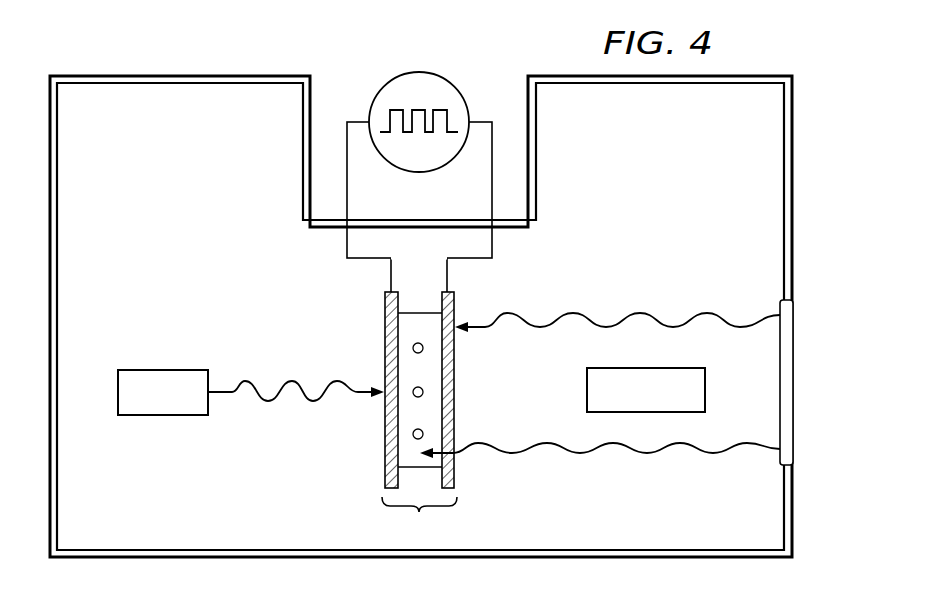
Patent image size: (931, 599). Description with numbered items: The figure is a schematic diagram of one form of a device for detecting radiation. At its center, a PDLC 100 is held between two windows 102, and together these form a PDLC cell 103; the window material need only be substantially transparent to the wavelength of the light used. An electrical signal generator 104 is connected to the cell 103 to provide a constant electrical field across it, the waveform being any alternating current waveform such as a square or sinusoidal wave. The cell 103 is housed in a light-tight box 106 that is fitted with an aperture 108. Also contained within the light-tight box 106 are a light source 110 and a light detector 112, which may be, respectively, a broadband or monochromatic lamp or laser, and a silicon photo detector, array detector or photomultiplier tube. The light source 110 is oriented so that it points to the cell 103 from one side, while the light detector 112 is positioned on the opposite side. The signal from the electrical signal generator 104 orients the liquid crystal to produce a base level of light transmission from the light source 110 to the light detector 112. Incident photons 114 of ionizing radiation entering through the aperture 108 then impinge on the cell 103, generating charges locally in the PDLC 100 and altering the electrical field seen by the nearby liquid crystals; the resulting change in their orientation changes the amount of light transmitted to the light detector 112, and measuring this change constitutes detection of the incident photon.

The PDLC 100 is at (415, 368).
The windows 102 is at (388, 432).
The PDLC cell 103 is at (419, 520).
The electrical signal generator 104 is at (438, 72).
The light-tight box 106 is at (210, 57).
The aperture 108 is at (794, 384).
The light source 110 is at (163, 370).
The light detector 112 is at (705, 390).
The incident photons 114 is at (643, 313).